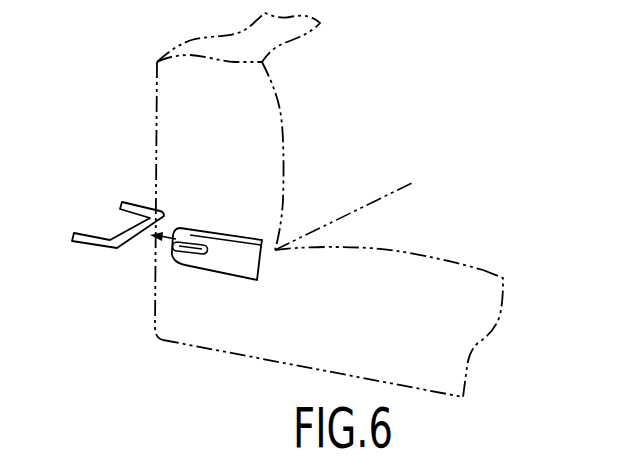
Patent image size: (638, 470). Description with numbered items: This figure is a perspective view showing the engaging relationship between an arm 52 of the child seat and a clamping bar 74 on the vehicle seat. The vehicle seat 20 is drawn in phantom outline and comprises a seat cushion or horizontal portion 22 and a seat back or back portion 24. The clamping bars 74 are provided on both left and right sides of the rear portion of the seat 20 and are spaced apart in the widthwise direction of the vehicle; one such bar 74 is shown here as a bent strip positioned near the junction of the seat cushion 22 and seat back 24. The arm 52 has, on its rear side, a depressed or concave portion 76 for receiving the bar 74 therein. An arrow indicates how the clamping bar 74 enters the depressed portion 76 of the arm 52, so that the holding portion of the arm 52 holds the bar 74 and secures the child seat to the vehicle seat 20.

The seat 20 is at (155, 146).
The seat cushion 22 is at (403, 268).
The seat back 24 is at (303, 109).
The arm 52 is at (225, 267).
The clamping bar 74 is at (122, 250).
The depressed portion 76 is at (193, 250).